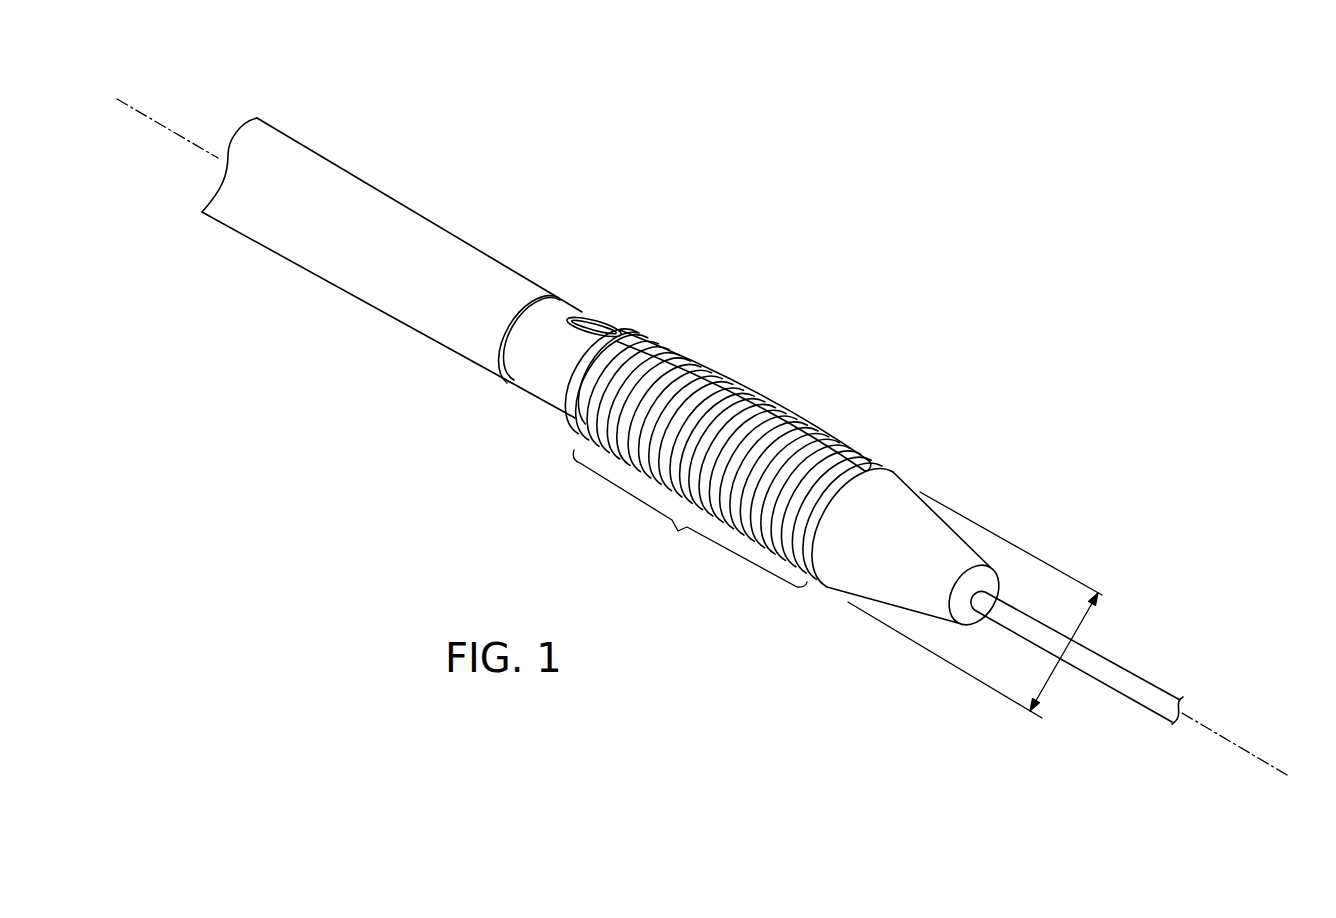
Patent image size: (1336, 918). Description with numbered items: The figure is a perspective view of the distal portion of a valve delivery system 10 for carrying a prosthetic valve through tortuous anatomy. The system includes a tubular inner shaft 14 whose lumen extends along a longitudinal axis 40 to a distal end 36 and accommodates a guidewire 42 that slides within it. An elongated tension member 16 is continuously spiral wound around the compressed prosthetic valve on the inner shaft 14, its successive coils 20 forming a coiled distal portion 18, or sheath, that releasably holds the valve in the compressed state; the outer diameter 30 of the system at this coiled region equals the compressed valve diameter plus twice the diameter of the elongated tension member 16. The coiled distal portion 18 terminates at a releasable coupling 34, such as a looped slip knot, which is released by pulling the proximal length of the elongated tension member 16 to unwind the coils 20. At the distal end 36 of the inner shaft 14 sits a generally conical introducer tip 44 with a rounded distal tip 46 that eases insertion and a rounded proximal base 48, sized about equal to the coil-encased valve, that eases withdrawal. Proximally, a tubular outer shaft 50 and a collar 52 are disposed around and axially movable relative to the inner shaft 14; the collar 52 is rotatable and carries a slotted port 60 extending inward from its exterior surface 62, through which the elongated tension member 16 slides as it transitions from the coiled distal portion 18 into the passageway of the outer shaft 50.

The valve delivery system 10 is at (1040, 286).
The inner shaft 14 is at (568, 417).
The elongated tension member 16 is at (617, 333).
The coiled distal portion 18 is at (676, 534).
The coils 20 is at (677, 350).
The outer diameter 30 is at (1075, 628).
The releasable coupling 34 is at (860, 463).
The distal end 36 is at (967, 653).
The longitudinal axis 40 is at (153, 121).
The guidewire 42 is at (1115, 675).
The introducer tip 44 is at (890, 592).
The distal tip 46 is at (985, 575).
The proximal base 48 is at (893, 470).
The outer shaft 50 is at (293, 165).
The collar 52 is at (548, 368).
The port 60 is at (582, 314).
The exterior surface 62 is at (520, 373).